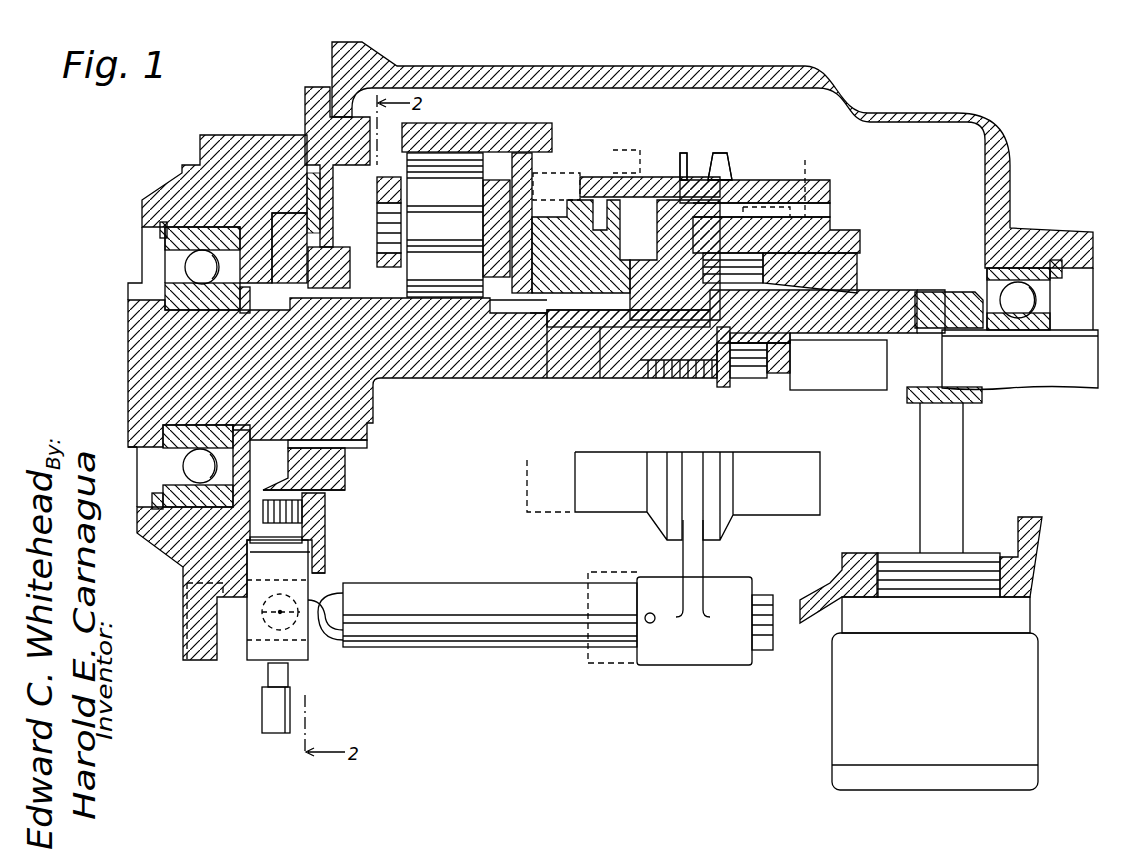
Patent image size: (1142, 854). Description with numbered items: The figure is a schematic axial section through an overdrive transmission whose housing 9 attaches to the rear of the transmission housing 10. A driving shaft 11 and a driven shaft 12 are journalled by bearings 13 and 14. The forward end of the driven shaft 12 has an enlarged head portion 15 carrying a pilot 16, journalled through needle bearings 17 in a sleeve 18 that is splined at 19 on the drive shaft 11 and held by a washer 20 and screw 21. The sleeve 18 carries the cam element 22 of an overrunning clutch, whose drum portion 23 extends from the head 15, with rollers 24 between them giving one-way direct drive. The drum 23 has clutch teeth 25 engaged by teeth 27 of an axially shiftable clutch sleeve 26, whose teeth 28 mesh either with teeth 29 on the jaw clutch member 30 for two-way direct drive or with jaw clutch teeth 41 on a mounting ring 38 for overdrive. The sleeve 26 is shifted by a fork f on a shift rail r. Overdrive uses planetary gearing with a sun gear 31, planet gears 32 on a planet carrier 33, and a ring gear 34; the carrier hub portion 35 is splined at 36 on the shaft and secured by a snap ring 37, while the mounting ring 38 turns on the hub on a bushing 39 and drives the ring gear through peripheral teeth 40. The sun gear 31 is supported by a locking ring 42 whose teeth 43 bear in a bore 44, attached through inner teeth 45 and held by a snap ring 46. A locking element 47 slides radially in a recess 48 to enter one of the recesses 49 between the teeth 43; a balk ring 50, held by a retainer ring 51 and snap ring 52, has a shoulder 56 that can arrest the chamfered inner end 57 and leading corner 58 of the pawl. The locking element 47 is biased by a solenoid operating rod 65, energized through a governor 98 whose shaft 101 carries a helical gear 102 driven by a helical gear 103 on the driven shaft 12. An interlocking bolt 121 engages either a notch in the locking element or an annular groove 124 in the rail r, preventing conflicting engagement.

The housing 9 is at (1010, 147).
The transmission housing 10 is at (195, 658).
The driving shaft 11 is at (140, 332).
The driven shaft 12 is at (1090, 390).
The bearing 13 is at (192, 266).
The bearing 14 is at (1030, 300).
The enlarged head portion 15 is at (893, 315).
The pilot 16 is at (842, 360).
The needle bearings 17 is at (775, 375).
The sleeve 18 is at (650, 378).
The splines 19 is at (720, 387).
The washer 20 is at (745, 380).
The screw 21 is at (735, 375).
The cam element 22 is at (760, 265).
The drum portion 23 is at (862, 238).
The rollers 24 is at (810, 258).
The clutch teeth 25 is at (832, 210).
The clutch sleeve 26 is at (605, 512).
The teeth 27 is at (782, 181).
The teeth 28 is at (722, 160).
The teeth 29 is at (686, 178).
The jaw clutch member 30 is at (650, 248).
The sun gear 31 is at (402, 315).
The planet gears 32 is at (458, 153).
The planet carrier 33 is at (512, 315).
The ring gear 34 is at (517, 123).
The hub portion 35 is at (570, 327).
The splines 36 is at (600, 330).
The snap ring 37 is at (500, 315).
The mounting ring 38 is at (563, 200).
The bushing 39 is at (545, 315).
The peripheral teeth 40 is at (525, 157).
The jaw clutch teeth 41 is at (625, 173).
The locking ring 42 is at (345, 489).
The teeth 43 is at (250, 210).
The bore 44 is at (245, 215).
The teeth 45 is at (366, 447).
The snap ring 46 is at (346, 468).
The locking element 47 is at (330, 578).
The recess 48 is at (185, 535).
The recesses 49 is at (326, 512).
The balk ring 50 is at (287, 213).
The retainer ring 51 is at (310, 175).
The snap ring 52 is at (307, 90).
The shoulder 56 is at (326, 548).
The inner end 57 is at (328, 538).
The leading corner 58 is at (268, 540).
The operating rod 65 is at (270, 718).
The governor 98 is at (921, 653).
The shaft 101 is at (963, 483).
The helical gear 102 is at (982, 395).
The helical gear 103 is at (955, 292).
The interlocking bolt 121 is at (306, 660).
The annular groove 124 is at (325, 632).
The shift rail r is at (500, 647).
The fork f is at (703, 665).